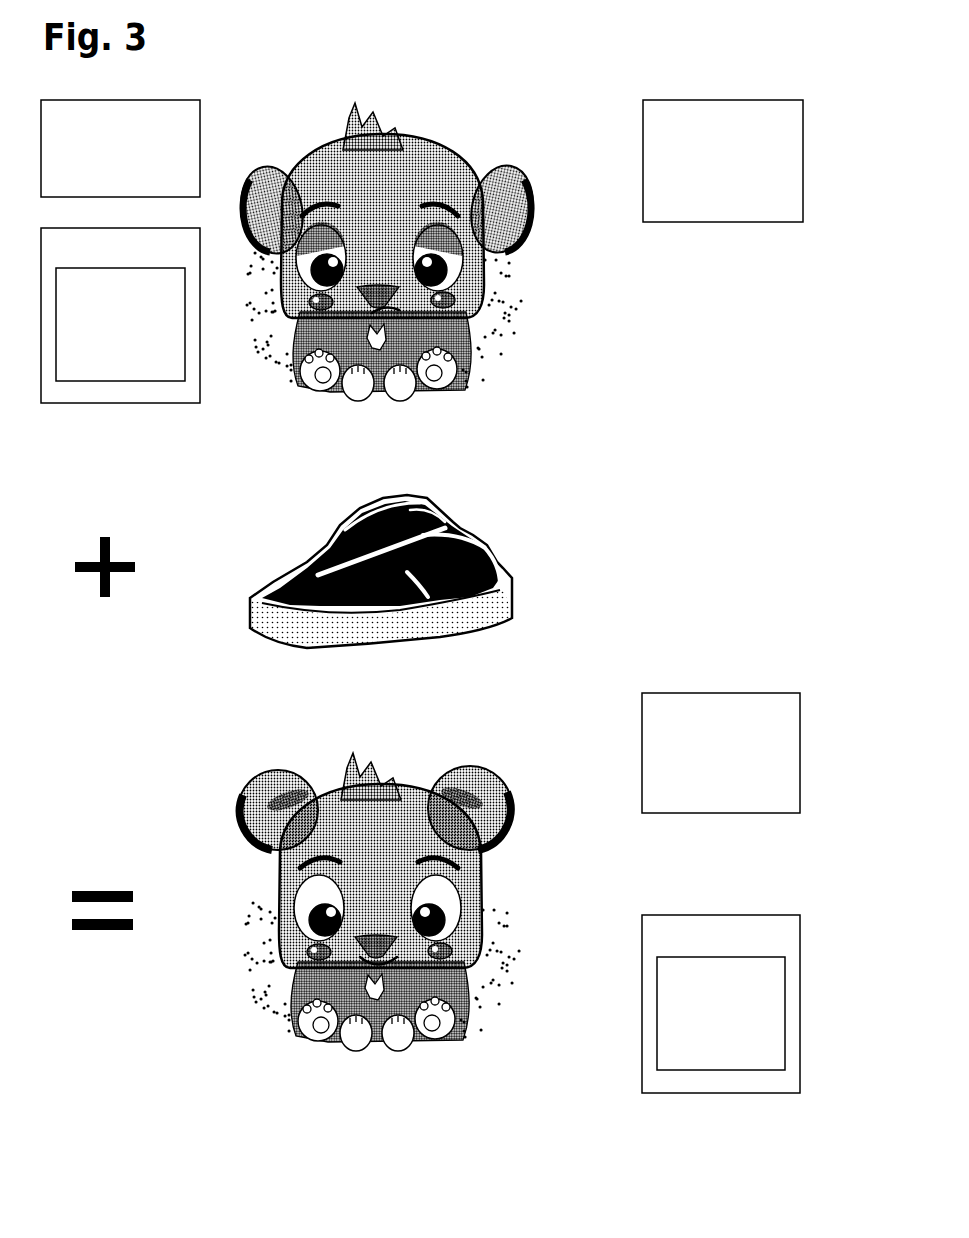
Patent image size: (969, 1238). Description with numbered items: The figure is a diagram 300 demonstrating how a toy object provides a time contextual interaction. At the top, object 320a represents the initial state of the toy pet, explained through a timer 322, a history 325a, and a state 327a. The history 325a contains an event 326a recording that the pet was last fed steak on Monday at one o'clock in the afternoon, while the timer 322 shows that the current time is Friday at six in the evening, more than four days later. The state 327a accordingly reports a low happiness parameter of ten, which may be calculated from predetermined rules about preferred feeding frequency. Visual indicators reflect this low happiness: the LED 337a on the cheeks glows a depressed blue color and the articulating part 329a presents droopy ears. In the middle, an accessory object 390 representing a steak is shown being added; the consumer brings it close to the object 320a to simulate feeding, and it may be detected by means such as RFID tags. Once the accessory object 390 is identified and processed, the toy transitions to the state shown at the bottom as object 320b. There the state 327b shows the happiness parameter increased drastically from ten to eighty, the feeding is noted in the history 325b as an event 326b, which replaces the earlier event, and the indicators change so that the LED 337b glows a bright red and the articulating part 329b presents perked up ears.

The diagram 300 is at (736, 76).
The object 320a is at (408, 147).
The object 320b is at (400, 795).
The timer 322 is at (263, 172).
The history 325a is at (248, 247).
The history 325b is at (478, 902).
The event 326a is at (165, 291).
The event 326b is at (765, 980).
The state 327a is at (518, 202).
The state 327b is at (502, 790).
The articulating part 329a is at (465, 230).
The articulating part 329b is at (466, 826).
The LED 337a is at (523, 350).
The LED 337b is at (514, 1000).
The accessory object 390 is at (455, 532).